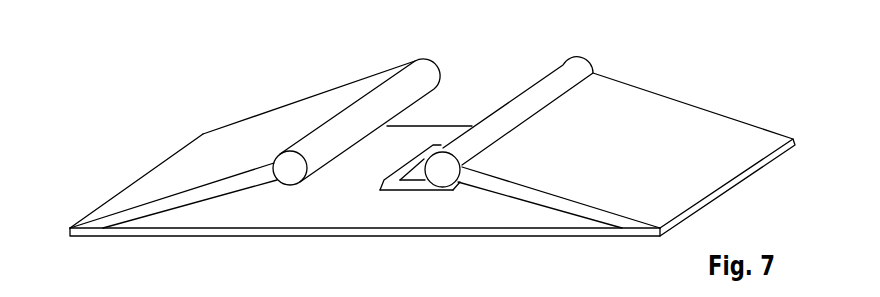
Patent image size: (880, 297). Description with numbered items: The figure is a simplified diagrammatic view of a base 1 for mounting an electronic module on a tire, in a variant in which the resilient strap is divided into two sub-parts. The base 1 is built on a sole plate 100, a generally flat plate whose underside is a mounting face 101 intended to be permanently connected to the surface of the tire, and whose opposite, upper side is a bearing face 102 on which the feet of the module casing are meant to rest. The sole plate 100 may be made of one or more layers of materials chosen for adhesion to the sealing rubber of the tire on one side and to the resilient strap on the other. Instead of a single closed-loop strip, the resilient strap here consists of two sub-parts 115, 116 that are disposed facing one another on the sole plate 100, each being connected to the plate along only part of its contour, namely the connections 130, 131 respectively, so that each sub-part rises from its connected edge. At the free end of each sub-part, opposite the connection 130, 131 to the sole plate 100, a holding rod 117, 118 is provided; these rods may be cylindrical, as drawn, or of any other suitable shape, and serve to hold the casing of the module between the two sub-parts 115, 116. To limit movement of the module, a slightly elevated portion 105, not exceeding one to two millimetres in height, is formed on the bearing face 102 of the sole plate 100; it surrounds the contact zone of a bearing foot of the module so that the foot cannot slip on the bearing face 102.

The base 1 is at (805, 97).
The sole plate 100 is at (263, 237).
The mounting face 101 is at (477, 237).
The bearing face 102 is at (543, 215).
The elevated portion 105 is at (412, 188).
The sub-part of the resilient strap 115 is at (250, 115).
The sub-part of the resilient strap 116 is at (677, 100).
The holding rod 117 is at (373, 108).
The holding rod 118 is at (517, 108).
The contour connection 130 is at (143, 172).
The contour connection 131 is at (703, 205).